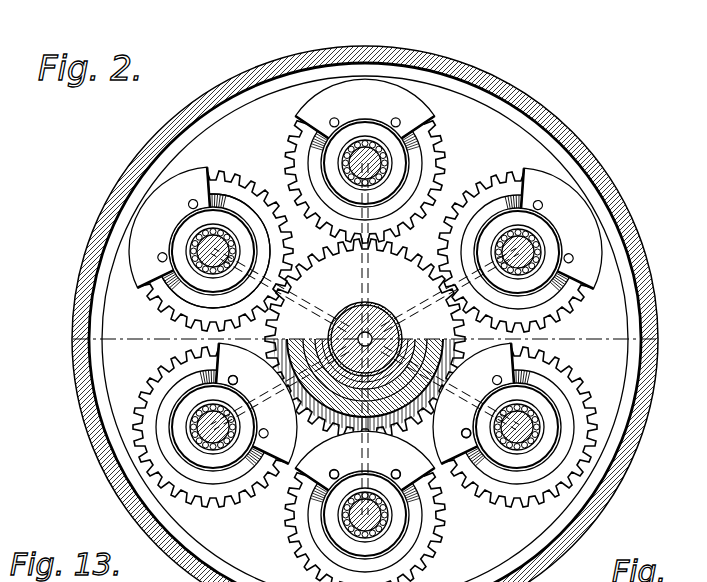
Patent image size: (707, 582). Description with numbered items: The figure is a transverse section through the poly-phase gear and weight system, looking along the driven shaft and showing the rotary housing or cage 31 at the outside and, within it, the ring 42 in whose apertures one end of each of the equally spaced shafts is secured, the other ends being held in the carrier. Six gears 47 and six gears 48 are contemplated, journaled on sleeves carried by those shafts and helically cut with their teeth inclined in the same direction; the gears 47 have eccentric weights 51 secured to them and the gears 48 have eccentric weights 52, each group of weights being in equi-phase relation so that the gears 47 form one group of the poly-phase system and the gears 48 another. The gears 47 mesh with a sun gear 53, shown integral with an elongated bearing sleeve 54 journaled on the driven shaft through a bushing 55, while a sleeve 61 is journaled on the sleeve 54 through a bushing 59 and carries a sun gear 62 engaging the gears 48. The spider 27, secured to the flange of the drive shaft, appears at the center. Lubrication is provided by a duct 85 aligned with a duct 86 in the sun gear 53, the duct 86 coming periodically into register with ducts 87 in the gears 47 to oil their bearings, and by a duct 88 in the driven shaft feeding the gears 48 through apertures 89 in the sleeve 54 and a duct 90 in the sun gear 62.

The spider 27 is at (369, 330).
The rotary housing or cage 31 is at (582, 148).
The ring 42 is at (507, 138).
The gears 47 is at (434, 140).
The gears 48 is at (436, 541).
The eccentric weights 51 is at (352, 86).
The eccentric weights 52 is at (503, 359).
The sun gear 53 is at (297, 262).
The elongated bearing sleeve 54 is at (336, 469).
The bushing 55 is at (312, 394).
The bushing 59 is at (283, 364).
The sleeve 61 is at (394, 468).
The sun gear 62 is at (461, 433).
The duct 85 is at (345, 306).
The duct 86 is at (369, 266).
The ducts 87 is at (251, 221).
The duct 88 is at (396, 323).
The apertures 89 is at (410, 344).
The duct 90 is at (486, 402).